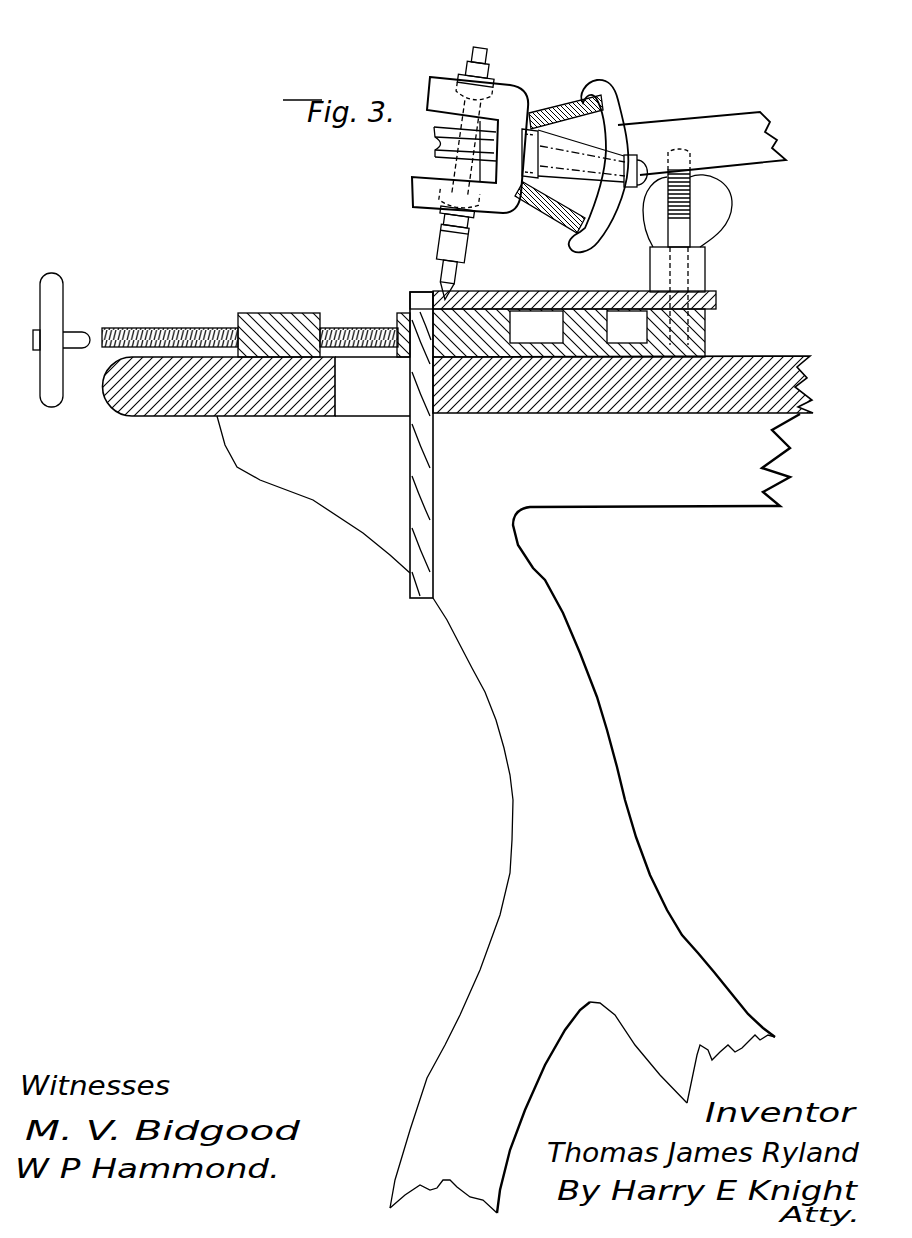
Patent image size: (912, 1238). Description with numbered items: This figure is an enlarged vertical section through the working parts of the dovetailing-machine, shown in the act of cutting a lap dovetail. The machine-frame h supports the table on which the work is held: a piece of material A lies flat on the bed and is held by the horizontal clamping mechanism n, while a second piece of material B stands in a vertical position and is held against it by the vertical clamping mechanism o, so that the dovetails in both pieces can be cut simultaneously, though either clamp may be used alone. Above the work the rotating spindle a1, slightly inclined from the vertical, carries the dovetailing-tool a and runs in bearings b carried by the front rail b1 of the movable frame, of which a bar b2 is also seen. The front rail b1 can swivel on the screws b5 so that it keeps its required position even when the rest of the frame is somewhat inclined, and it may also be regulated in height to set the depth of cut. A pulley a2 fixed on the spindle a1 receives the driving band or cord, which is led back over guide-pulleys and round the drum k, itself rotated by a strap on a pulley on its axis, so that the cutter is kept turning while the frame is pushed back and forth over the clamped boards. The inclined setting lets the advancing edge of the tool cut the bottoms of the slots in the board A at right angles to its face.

The dovetailing-tool a is at (436, 292).
The rotating spindle a1 is at (490, 54).
The pulley a2 is at (438, 143).
The bearings b is at (550, 210).
The front rail b1 is at (562, 108).
The movable frame bar b2 is at (677, 166).
The screws b5 is at (560, 153).
The horizontal clamping mechanism n is at (687, 247).
The piece of material A is at (558, 290).
The vertical clamping mechanism o is at (221, 340).
The drum k is at (458, 386).
The piece of material B is at (408, 445).
The machine-frame h is at (508, 813).